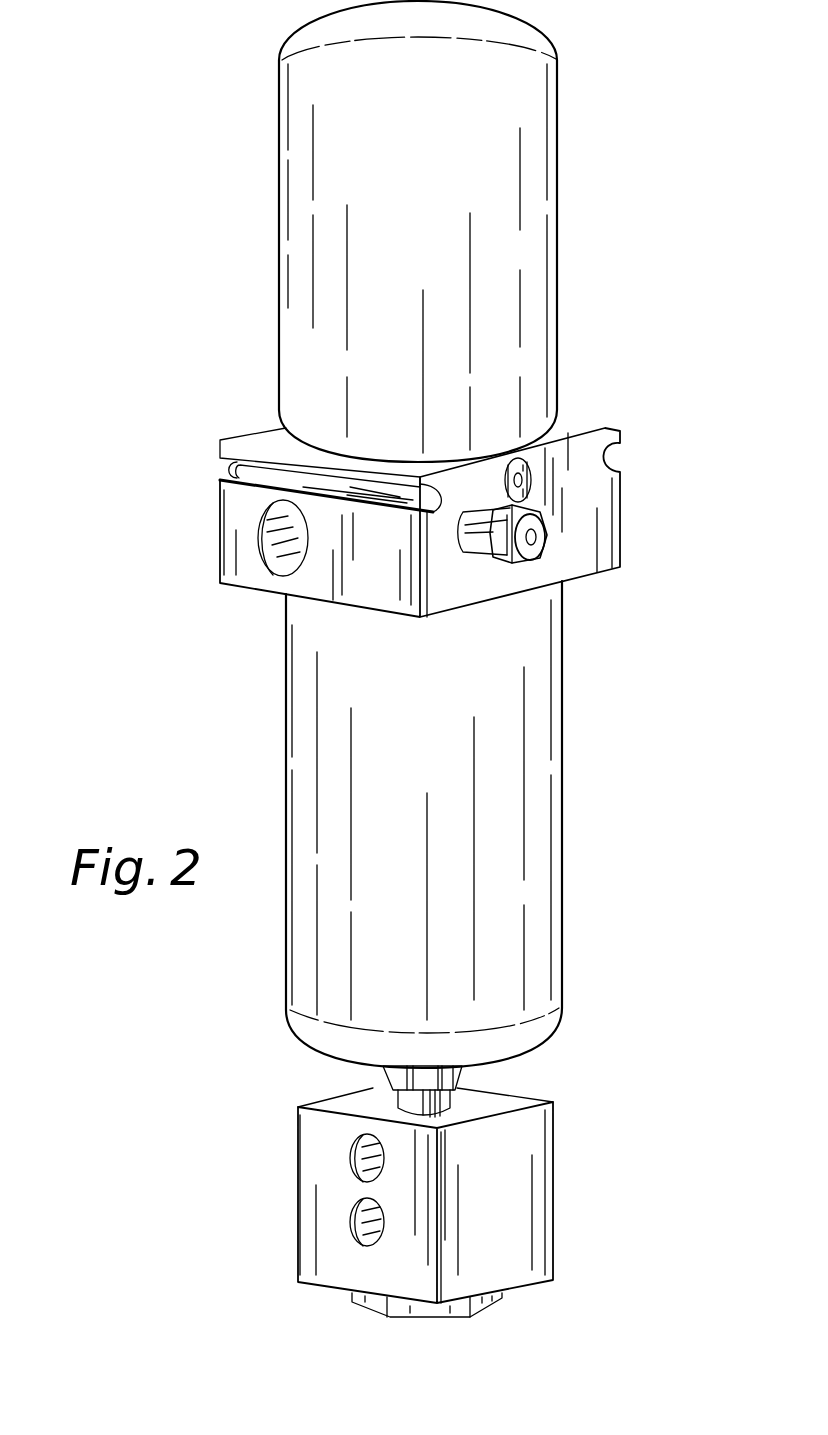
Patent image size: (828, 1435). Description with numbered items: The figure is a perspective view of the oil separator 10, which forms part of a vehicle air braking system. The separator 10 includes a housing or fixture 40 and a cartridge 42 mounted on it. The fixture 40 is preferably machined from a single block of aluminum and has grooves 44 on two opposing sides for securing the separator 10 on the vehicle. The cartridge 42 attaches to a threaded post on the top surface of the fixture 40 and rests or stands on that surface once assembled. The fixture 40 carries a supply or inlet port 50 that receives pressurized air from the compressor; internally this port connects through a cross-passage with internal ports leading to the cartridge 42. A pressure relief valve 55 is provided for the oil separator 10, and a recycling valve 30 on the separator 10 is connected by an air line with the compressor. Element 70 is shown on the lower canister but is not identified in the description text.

The oil separator 10 is at (118, 15).
The cartridge 42 is at (477, 182).
The grooves 44 is at (234, 471).
The fixture 40 is at (468, 580).
The inlet port 50 is at (270, 552).
The pressure relief valve 55 is at (545, 543).
The filter canister 70 is at (505, 835).
The recycling valve 30 is at (497, 1185).